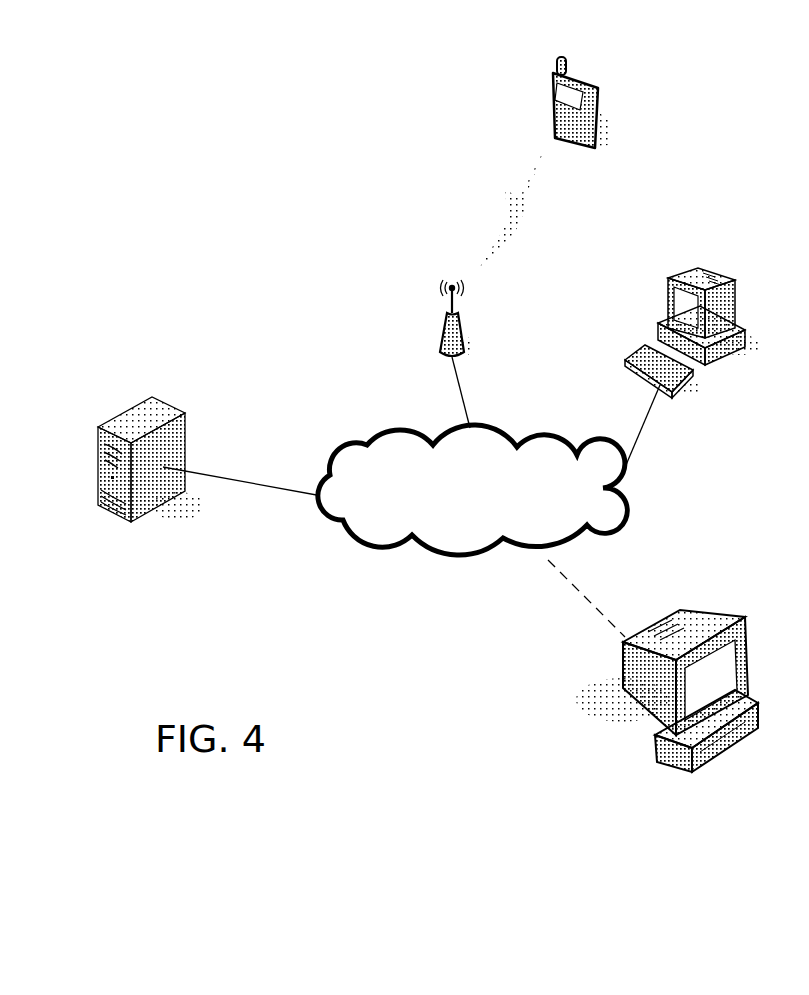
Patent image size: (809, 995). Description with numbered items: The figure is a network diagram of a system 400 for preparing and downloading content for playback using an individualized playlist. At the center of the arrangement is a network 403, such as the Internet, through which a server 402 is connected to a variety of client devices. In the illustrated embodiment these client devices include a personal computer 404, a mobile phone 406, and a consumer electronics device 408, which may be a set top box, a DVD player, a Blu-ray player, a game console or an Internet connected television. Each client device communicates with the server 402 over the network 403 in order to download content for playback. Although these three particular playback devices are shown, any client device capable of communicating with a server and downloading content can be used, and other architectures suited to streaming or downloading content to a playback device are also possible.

The system 400 is at (325, 203).
The server 402 is at (170, 408).
The network 403 is at (378, 548).
The personal computer 404 is at (718, 280).
The mobile phone 406 is at (590, 80).
The consumer electronics device 408 is at (663, 760).